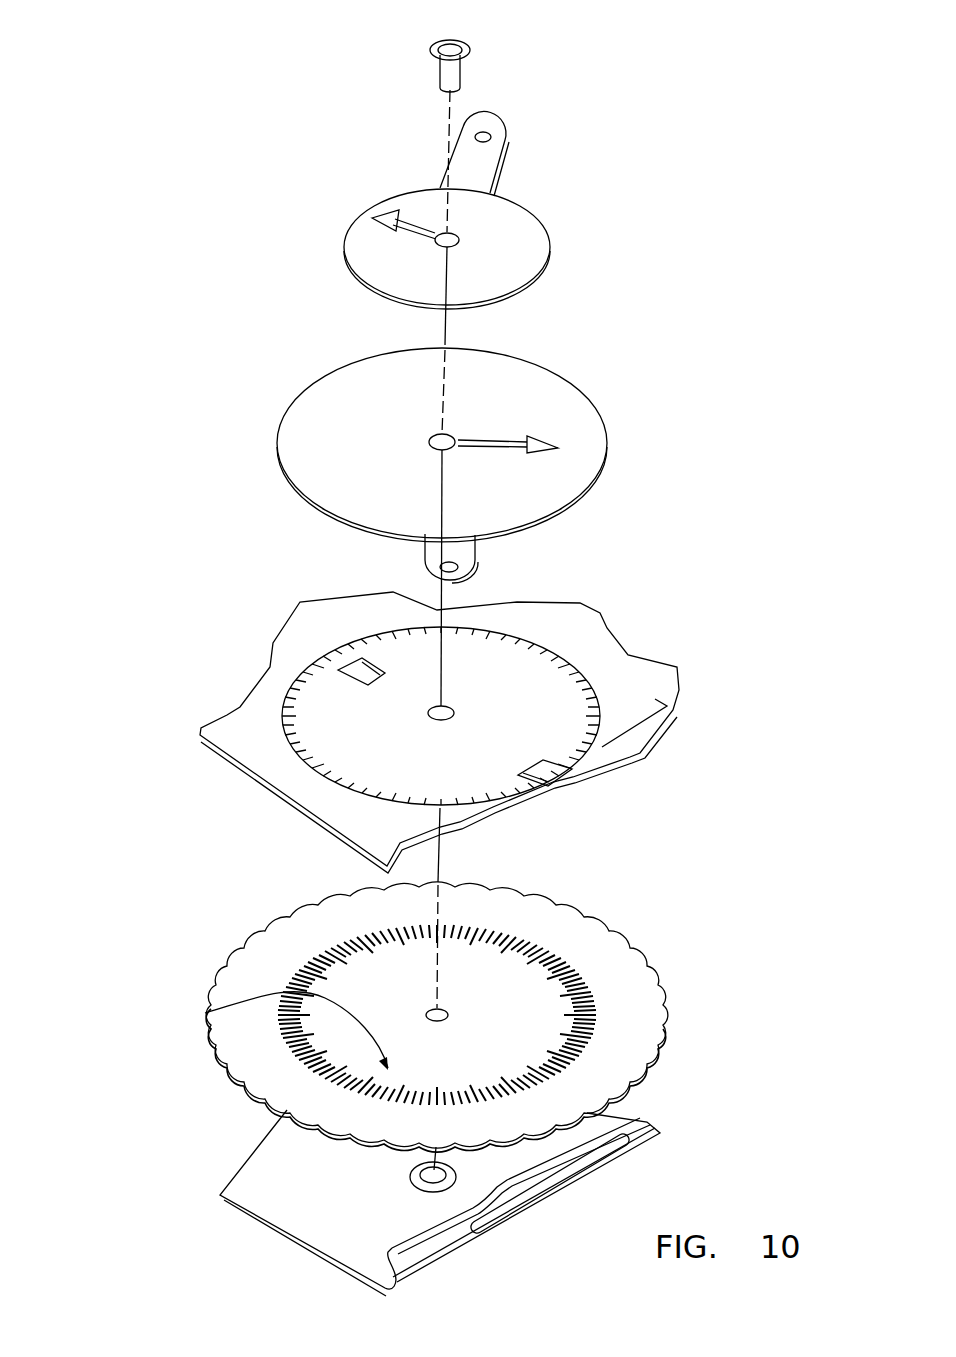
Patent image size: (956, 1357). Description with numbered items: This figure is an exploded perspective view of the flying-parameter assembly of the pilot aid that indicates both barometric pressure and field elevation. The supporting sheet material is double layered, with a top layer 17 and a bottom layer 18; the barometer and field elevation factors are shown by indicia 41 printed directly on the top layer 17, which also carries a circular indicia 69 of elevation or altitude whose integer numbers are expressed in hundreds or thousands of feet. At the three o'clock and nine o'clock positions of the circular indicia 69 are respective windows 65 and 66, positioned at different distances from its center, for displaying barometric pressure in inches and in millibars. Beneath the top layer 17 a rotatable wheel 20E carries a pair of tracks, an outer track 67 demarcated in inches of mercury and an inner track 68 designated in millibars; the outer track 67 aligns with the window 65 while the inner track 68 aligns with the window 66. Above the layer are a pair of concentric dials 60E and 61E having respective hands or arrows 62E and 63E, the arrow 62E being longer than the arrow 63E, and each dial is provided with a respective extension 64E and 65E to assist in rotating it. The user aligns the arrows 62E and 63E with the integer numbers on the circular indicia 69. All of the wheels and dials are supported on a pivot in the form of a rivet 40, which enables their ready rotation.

The rivet 40 is at (440, 45).
The extension 65E is at (505, 140).
The dial 61E is at (454, 204).
The arrow 63E is at (410, 238).
The dial 60E is at (485, 454).
The arrow 62E is at (497, 450).
The extension 64E is at (440, 558).
The top layer 17 is at (447, 705).
The indicia 41 is at (628, 655).
The window 66 is at (346, 668).
The circular indicia 69 is at (486, 673).
The window 65 is at (537, 778).
The outer track 67 is at (553, 922).
The wheel 20E is at (444, 986).
The inner track 68 is at (205, 1013).
The bottom layer 18 is at (340, 1218).